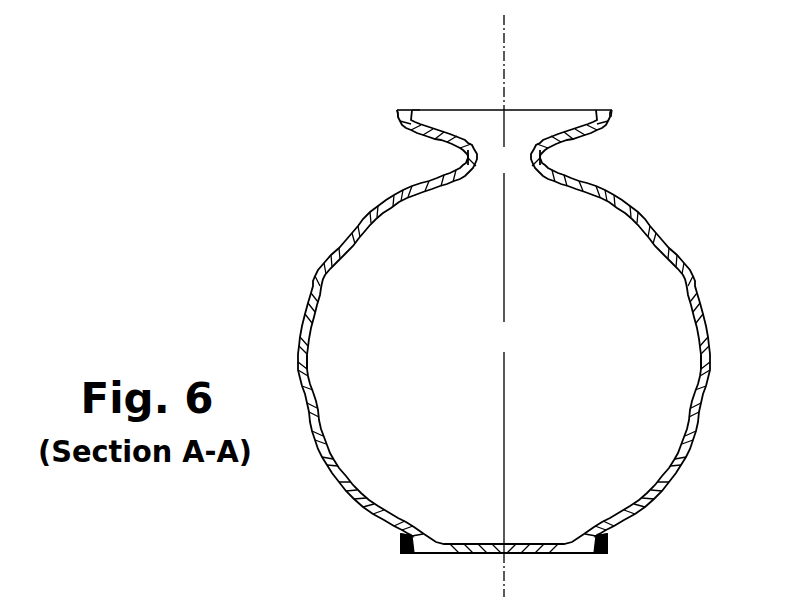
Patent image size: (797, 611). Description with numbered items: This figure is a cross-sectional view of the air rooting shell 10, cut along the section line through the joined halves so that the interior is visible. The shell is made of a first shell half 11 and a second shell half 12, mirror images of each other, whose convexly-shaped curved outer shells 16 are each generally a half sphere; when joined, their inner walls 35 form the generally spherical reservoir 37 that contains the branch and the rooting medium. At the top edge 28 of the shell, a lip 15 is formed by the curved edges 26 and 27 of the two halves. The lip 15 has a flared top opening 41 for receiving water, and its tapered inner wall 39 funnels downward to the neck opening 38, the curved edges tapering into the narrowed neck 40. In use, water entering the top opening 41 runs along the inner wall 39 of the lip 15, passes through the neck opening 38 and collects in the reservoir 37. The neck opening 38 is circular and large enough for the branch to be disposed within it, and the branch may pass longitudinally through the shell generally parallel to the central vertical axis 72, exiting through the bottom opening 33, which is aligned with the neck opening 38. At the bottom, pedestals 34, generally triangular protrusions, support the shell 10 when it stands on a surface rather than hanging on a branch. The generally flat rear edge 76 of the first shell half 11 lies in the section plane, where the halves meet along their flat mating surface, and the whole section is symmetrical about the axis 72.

The air rooting shell 10 is at (302, 110).
The first shell half 11 is at (355, 223).
The second shell half 12 is at (650, 218).
The lip 15 is at (540, 107).
The curved outer shell 16 is at (313, 290).
The curved edge 26 is at (398, 108).
The curved edge 27 is at (607, 115).
The top edge 28 is at (575, 108).
The bottom opening 33 is at (525, 550).
The pedestal 34 is at (420, 548).
The inner walls 35 is at (316, 315).
The reservoir 37 is at (490, 348).
The neck opening 38 is at (490, 170).
The tapered inner wall 39 is at (418, 113).
The narrowed neck 40 is at (462, 152).
The top opening 41 is at (480, 107).
The central vertical axis 72 is at (505, 72).
The rear edge 76 is at (504, 105).